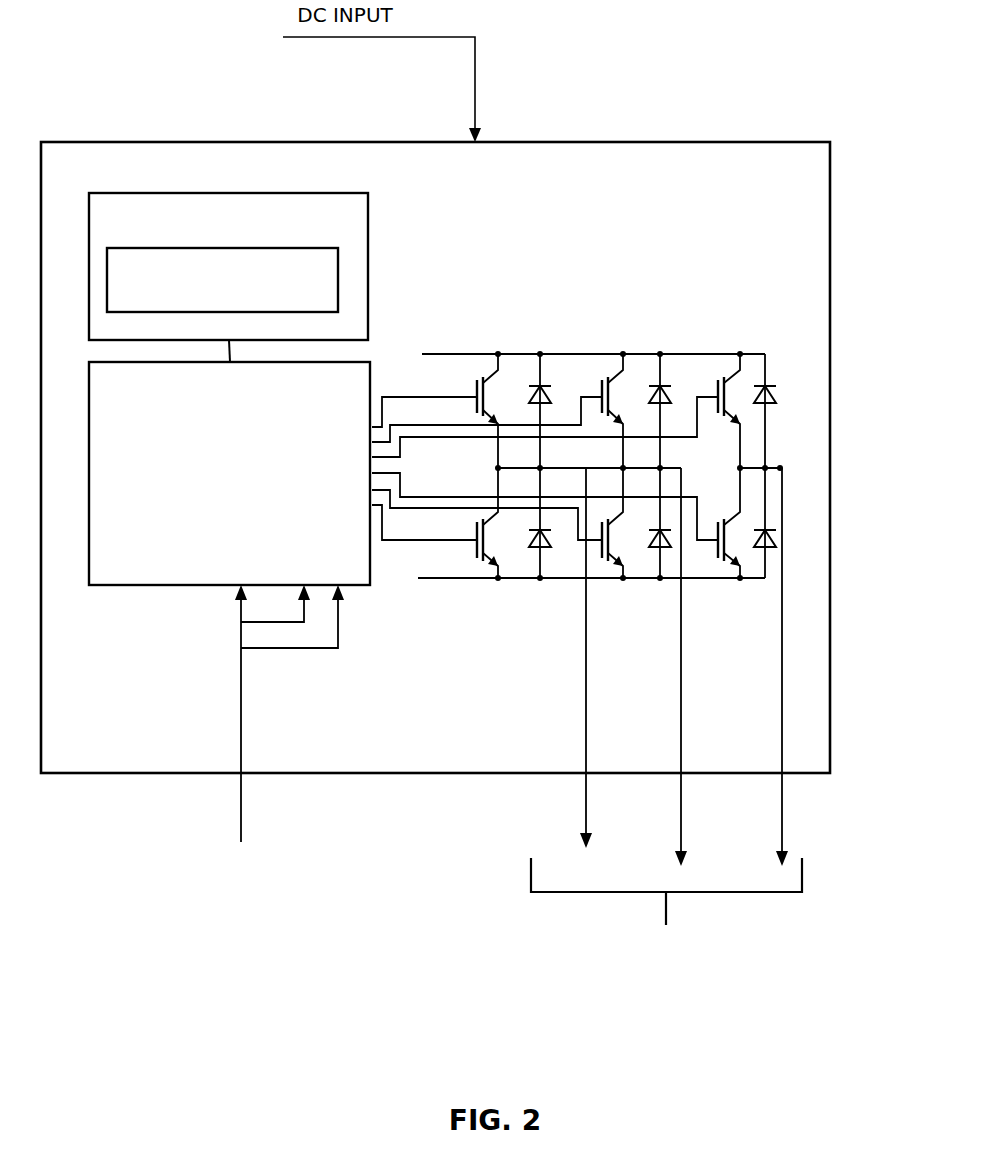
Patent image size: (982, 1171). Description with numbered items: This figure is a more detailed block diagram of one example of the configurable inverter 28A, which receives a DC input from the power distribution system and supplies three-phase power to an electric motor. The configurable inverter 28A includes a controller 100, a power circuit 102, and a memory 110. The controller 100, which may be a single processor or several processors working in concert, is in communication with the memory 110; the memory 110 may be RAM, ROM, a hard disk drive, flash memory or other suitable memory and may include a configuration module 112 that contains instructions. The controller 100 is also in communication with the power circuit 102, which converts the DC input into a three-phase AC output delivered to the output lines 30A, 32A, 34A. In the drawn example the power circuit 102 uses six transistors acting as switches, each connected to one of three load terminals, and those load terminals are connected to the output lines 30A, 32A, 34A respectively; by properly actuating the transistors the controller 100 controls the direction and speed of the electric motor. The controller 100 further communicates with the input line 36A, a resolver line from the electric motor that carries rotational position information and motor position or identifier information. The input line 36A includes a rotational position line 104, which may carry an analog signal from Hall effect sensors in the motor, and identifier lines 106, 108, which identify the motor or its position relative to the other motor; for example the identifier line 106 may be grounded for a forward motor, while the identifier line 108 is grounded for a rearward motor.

The configurable inverter 28A is at (558, 142).
The memory 110 is at (368, 207).
The configuration module 112 is at (338, 283).
The controller 100 is at (129, 585).
The power circuit 102 is at (780, 350).
The rotational position line 104 is at (241, 610).
The identifier line 106 is at (270, 622).
The identifier line 108 is at (338, 620).
The input line 36A is at (241, 805).
The output line 30A is at (586, 790).
The output line 32A is at (681, 833).
The output line 34A is at (782, 796).